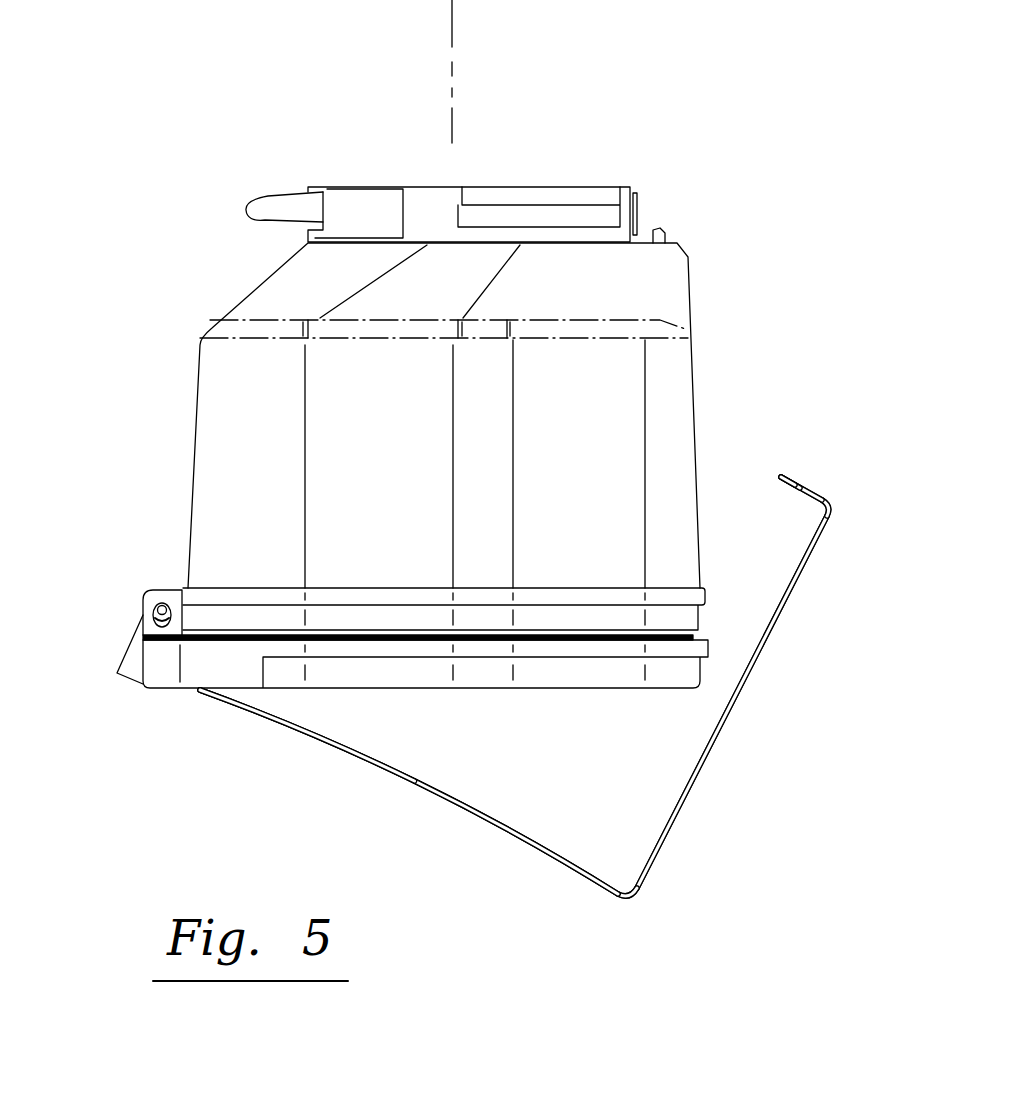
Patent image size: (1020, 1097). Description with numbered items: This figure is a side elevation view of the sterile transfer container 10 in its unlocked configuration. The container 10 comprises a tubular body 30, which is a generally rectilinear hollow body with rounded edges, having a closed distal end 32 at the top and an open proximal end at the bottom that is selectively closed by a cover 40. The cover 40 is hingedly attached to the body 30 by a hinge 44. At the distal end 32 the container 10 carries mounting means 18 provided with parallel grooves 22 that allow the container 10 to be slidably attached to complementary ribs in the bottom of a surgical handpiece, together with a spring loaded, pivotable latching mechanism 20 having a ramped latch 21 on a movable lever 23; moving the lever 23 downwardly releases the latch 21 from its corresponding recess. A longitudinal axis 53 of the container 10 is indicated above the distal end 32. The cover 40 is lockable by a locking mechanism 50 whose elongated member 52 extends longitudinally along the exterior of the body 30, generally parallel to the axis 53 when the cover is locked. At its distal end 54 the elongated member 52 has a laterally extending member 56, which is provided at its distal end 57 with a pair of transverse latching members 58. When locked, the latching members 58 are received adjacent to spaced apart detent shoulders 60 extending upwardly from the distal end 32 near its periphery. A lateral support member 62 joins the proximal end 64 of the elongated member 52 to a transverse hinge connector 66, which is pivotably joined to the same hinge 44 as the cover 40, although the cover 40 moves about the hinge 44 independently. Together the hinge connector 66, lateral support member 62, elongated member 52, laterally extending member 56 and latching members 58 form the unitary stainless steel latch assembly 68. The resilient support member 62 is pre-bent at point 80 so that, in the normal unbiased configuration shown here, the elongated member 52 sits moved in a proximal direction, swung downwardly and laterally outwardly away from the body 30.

The sterile transfer container 10 is at (190, 495).
The mounting means 18 is at (632, 187).
The latching mechanism 20 is at (355, 186).
The ramped latch 21 is at (357, 184).
The parallel grooves 22 is at (587, 213).
The movable lever 23 is at (268, 202).
The tubular body 30 is at (230, 538).
The closed distal end 32 is at (272, 290).
The cover 40 is at (208, 677).
The hinge 44 is at (160, 608).
The locking mechanism 50 is at (695, 792).
The elongated member 52 is at (742, 690).
The axis 53 is at (453, 34).
The distal end 54 is at (832, 522).
The laterally extending member 56 is at (812, 488).
The distal end 57 is at (787, 483).
The transverse latching members 58 is at (783, 475).
The detent shoulders 60 is at (653, 230).
The lateral support member 62 is at (463, 797).
The proximal end 64 is at (647, 888).
The transverse hinge connector 66 is at (133, 657).
The latch assembly 68 is at (365, 753).
The point 80 is at (500, 822).